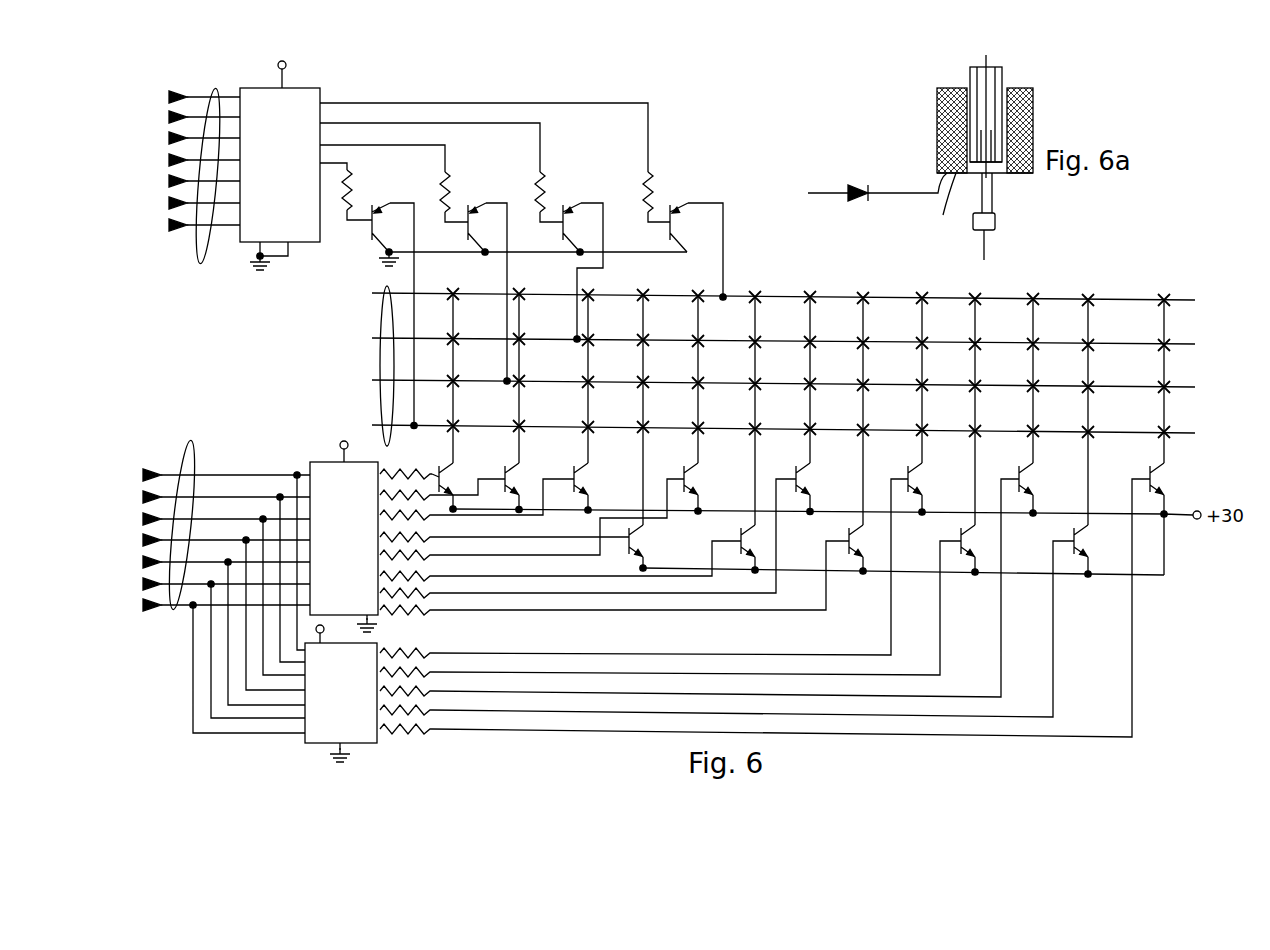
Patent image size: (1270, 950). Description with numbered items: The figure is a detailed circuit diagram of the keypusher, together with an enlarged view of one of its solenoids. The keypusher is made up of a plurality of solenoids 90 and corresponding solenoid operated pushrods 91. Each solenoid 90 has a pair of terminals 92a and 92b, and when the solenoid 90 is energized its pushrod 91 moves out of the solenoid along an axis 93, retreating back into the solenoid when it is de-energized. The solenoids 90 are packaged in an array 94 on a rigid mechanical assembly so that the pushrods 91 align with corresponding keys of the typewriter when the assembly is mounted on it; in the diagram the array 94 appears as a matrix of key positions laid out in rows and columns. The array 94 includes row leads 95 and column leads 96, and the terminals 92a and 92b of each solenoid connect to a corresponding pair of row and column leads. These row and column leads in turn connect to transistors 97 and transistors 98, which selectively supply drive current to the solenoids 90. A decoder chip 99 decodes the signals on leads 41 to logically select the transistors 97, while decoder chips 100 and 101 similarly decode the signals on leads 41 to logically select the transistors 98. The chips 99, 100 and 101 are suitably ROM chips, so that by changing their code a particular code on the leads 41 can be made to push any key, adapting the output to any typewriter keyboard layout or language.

In FIG. 6, the leads 41 is at (226, 410).
In FIG. 6, the decoder chip 99 is at (296, 244).
In FIG. 6, the transistors 97 is at (368, 233).
In FIG. 6, the array 94 is at (375, 371).
In FIG. 6, the row leads 95 is at (388, 432).
In FIG. 6, the column leads 96 is at (515, 434).
In FIG. 6, the transistors 98 is at (1146, 480).
In FIG. 6, the decoder chip 100 is at (308, 461).
In FIG. 6, the decoder chip 101 is at (378, 743).
In FIG. 6A, the solenoid 90 is at (937, 118).
In FIG. 6A, the pushrod 91 is at (992, 206).
In FIG. 6A, the terminal 92a is at (822, 190).
In FIG. 6A, the terminal 92b is at (940, 207).
In FIG. 6A, the axis 93 is at (990, 249).